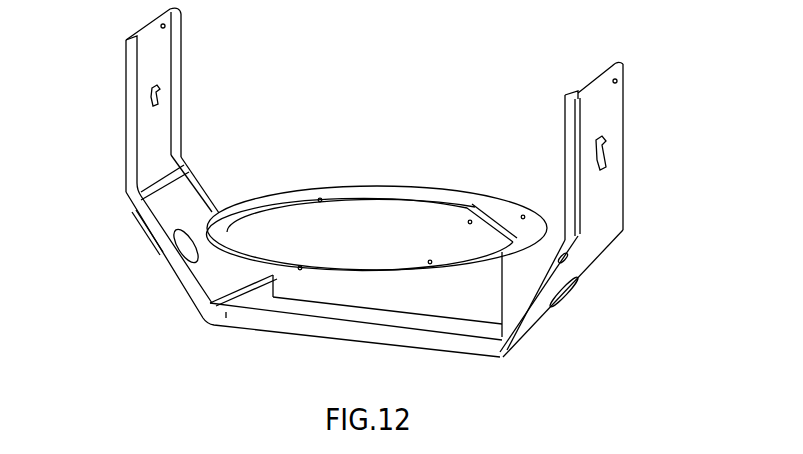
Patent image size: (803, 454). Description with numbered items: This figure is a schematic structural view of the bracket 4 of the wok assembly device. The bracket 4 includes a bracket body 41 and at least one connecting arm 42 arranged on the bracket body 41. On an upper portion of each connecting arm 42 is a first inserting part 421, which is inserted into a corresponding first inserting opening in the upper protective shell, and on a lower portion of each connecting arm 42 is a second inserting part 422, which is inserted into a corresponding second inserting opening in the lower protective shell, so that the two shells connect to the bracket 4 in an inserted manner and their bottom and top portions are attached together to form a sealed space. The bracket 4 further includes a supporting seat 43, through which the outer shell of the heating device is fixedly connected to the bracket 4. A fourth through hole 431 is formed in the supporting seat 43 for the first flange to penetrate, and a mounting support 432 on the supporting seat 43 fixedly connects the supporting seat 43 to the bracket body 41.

The bracket 4 is at (385, 182).
The bracket body 41 is at (361, 268).
The connecting arm 42 is at (183, 62).
The first inserting part 421 is at (160, 113).
The second inserting part 422 is at (190, 218).
The supporting seat 43 is at (490, 260).
The fourth through hole 431 is at (368, 235).
The mounting support 432 is at (513, 282).